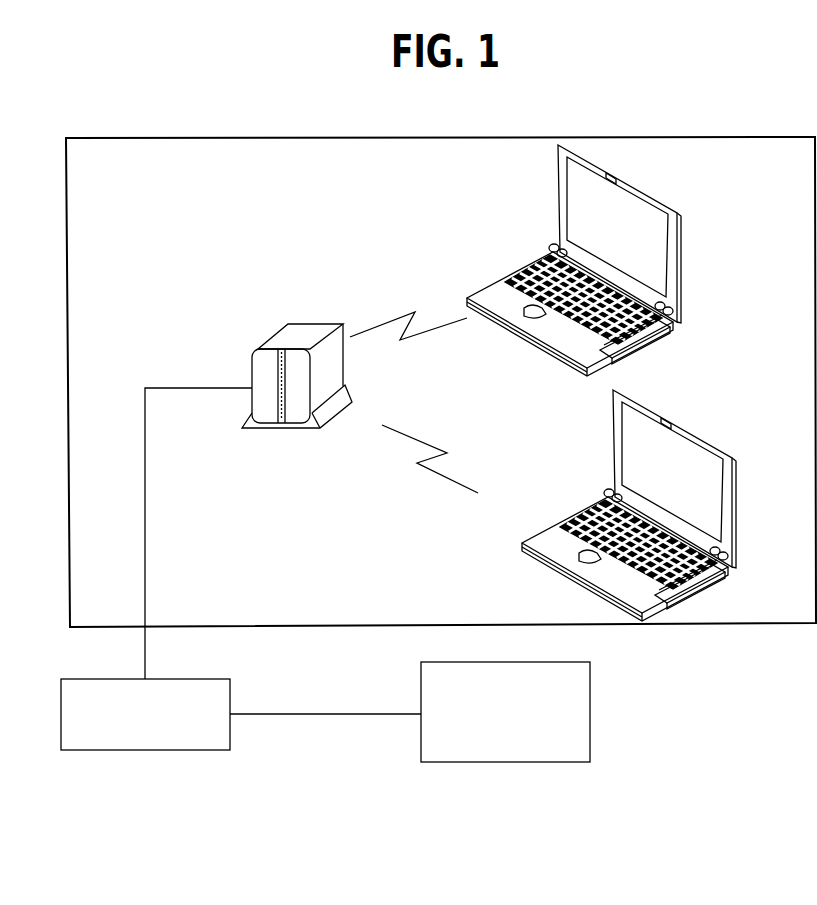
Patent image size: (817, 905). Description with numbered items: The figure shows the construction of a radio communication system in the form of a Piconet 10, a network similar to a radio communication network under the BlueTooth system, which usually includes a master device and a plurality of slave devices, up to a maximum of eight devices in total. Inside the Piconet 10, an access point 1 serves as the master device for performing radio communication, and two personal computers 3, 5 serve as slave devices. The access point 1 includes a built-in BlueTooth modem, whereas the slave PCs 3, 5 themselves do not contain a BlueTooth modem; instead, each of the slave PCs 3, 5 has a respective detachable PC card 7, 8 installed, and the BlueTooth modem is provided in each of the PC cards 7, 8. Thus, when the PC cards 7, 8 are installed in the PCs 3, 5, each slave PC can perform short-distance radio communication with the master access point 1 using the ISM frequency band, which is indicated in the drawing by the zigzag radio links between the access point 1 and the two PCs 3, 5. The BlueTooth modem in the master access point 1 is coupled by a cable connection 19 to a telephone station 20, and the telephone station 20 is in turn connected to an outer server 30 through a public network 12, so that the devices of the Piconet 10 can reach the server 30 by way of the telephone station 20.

The access point 1 is at (254, 347).
The personal computer 3 is at (591, 261).
The personal computer 5 is at (645, 505).
The PC card 7 is at (663, 338).
The PC card 8 is at (702, 588).
The Piconet 10 is at (514, 134).
The public network 12 is at (295, 715).
The line connecting access point to telephone station 19 is at (180, 385).
The telephone station 20 is at (145, 750).
The server 30 is at (475, 763).